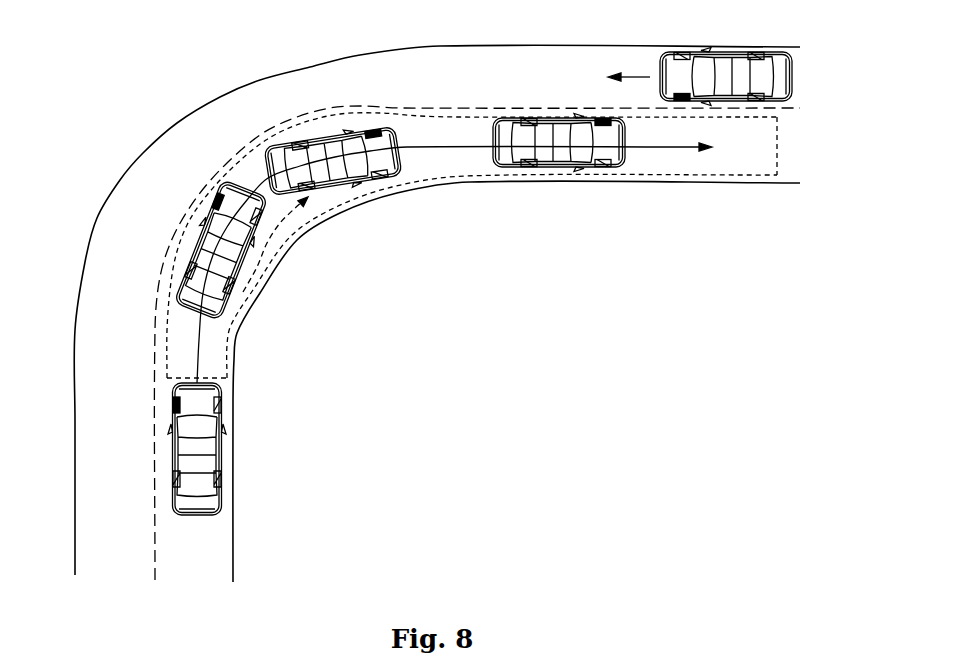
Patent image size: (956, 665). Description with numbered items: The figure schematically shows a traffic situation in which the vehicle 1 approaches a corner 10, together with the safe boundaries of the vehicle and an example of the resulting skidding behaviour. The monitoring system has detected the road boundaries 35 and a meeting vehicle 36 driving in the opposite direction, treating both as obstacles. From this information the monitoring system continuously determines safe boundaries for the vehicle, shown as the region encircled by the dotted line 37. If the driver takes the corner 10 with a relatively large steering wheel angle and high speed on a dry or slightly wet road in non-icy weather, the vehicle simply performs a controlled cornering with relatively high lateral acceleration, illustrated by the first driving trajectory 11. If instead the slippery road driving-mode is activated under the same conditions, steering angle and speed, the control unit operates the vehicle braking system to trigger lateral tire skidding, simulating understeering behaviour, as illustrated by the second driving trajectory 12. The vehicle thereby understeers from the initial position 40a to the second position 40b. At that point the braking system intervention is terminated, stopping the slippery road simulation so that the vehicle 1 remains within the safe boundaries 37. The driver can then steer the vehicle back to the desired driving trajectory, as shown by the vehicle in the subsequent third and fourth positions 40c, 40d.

The vehicle 1 is at (195, 462).
The corner 10 is at (327, 205).
The first driving trajectory 11 is at (277, 247).
The second driving trajectory 12 is at (423, 150).
The road boundaries 35 is at (453, 185).
The meeting vehicle 36 is at (683, 78).
The dotted line 37 is at (322, 107).
The initial position 40a is at (257, 449).
The second position 40b is at (227, 260).
The third position 40c is at (357, 167).
The fourth position 40d is at (550, 153).